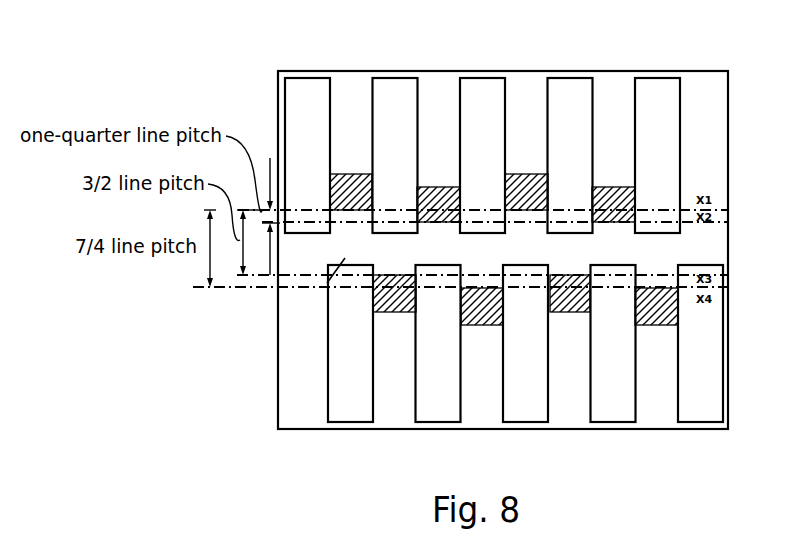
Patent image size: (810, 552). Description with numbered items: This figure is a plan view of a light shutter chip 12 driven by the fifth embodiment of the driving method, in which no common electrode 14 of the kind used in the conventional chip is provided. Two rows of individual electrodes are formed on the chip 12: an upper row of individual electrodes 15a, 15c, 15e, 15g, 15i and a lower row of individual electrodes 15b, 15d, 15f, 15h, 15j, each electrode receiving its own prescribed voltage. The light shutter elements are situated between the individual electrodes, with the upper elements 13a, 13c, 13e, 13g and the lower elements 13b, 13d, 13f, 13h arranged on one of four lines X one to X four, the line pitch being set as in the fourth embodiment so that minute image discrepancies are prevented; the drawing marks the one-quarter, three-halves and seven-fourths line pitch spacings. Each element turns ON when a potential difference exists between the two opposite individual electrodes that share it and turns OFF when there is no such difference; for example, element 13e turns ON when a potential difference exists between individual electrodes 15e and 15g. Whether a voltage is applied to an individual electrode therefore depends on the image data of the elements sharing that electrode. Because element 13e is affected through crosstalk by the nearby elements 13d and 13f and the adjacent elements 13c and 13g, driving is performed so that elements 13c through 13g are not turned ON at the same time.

The light shutter chip 12 is at (488, 66).
The common electrode 14 is at (321, 283).
The light shutter element 13a is at (330, 182).
The light shutter element 13c is at (417, 192).
The light shutter element 13e is at (505, 182).
The light shutter element 13g is at (592, 192).
The light shutter element 13b is at (372, 305).
The light shutter element 13d is at (461, 318).
The light shutter element 13f is at (550, 305).
The light shutter element 13h is at (635, 318).
The individual electrode 15a is at (320, 112).
The individual electrode 15c is at (408, 112).
The individual electrode 15e is at (495, 112).
The individual electrode 15g is at (583, 112).
The individual electrode 15i is at (728, 74).
The individual electrode 15b is at (333, 371).
The individual electrode 15d is at (421, 371).
The individual electrode 15f is at (508, 371).
The individual electrode 15h is at (597, 371).
The individual electrode 15j is at (684, 371).